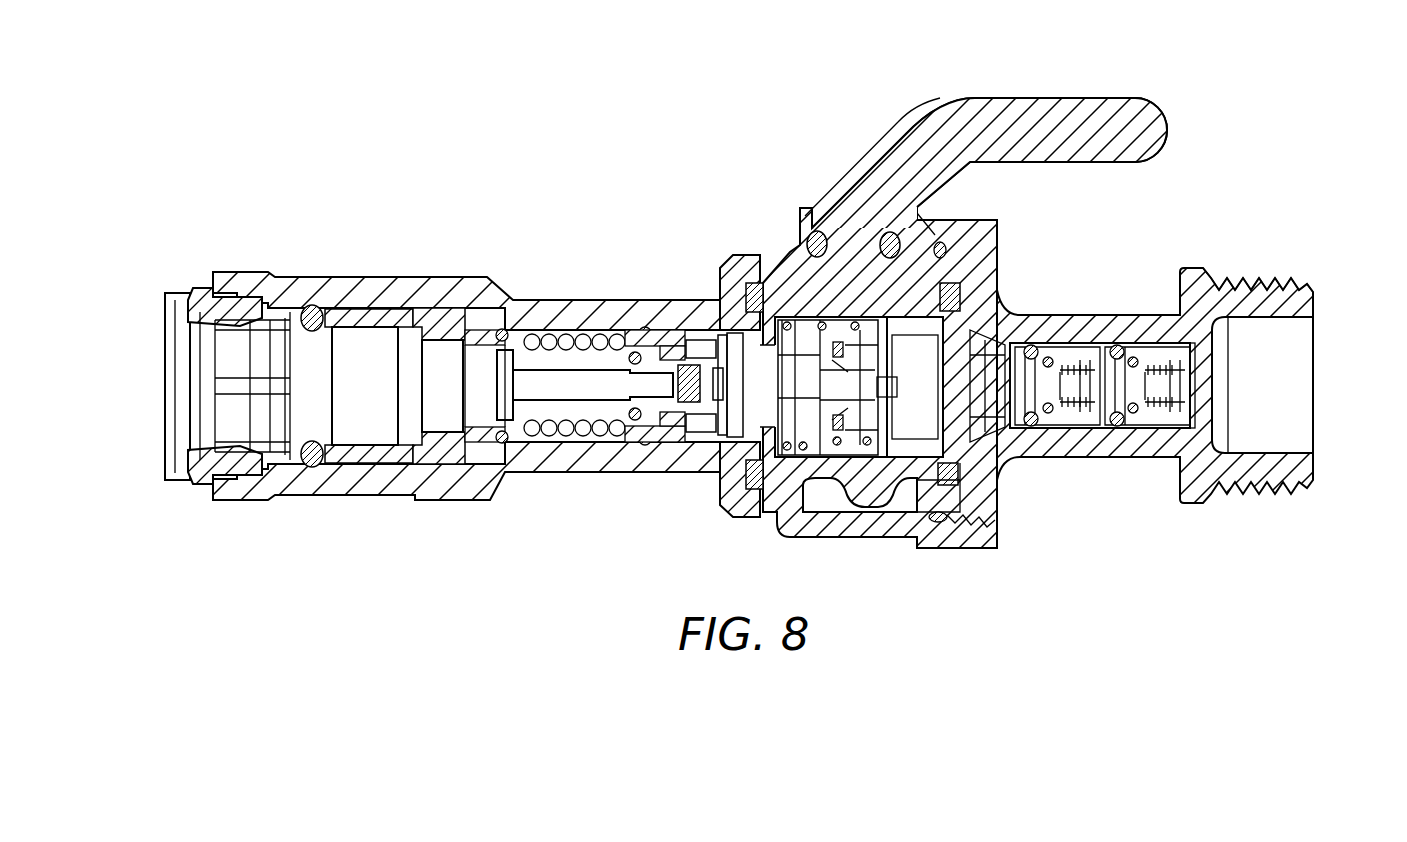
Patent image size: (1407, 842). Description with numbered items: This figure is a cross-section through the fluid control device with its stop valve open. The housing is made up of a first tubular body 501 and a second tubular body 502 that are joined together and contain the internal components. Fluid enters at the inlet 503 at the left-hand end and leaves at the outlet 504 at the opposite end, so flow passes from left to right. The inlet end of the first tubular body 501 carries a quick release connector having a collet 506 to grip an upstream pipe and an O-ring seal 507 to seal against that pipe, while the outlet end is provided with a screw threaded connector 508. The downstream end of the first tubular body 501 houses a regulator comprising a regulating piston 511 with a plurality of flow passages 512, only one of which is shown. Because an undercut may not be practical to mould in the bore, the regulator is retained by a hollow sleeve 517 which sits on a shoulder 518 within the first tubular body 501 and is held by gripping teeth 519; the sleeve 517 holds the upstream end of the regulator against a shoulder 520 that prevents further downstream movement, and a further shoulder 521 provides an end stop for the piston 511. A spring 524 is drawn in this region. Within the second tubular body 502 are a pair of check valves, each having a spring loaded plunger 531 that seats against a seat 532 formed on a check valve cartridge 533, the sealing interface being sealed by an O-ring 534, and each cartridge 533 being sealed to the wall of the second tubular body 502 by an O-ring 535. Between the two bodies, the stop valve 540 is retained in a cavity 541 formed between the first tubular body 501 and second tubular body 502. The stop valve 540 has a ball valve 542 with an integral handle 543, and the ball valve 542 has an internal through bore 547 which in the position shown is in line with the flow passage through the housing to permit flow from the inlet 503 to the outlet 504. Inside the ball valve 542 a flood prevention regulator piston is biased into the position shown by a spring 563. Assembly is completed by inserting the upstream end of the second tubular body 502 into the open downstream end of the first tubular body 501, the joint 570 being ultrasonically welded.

The first tubular body 501 is at (380, 280).
The second tubular body 502 is at (1085, 318).
The inlet 503 is at (150, 433).
The outlet 504 is at (1327, 424).
The collet 506 is at (190, 356).
The O-ring seal 507 is at (312, 305).
The screw threaded connector 508 is at (1278, 282).
The regulating piston 511 is at (690, 340).
The flow passage 512 is at (692, 300).
The hollow sleeve 517 is at (365, 458).
The shoulder 518 is at (447, 444).
The gripping teeth 519 is at (450, 300).
The shoulder 520 is at (490, 464).
The shoulder 521 is at (730, 457).
The spring 524 is at (662, 432).
The spring loaded plunger 531 is at (1160, 430).
The seat 532 is at (1130, 430).
The check valve cartridge 533 is at (1045, 442).
The O-ring 534 is at (1030, 340).
The O-ring 535 is at (1118, 340).
The stop valve 540 is at (918, 88).
The cavity 541 is at (827, 500).
The ball valve 542 is at (803, 473).
The handle 543 is at (1095, 110).
The through bore 547 is at (922, 432).
The spring 563 is at (790, 300).
The joint 570 is at (990, 548).